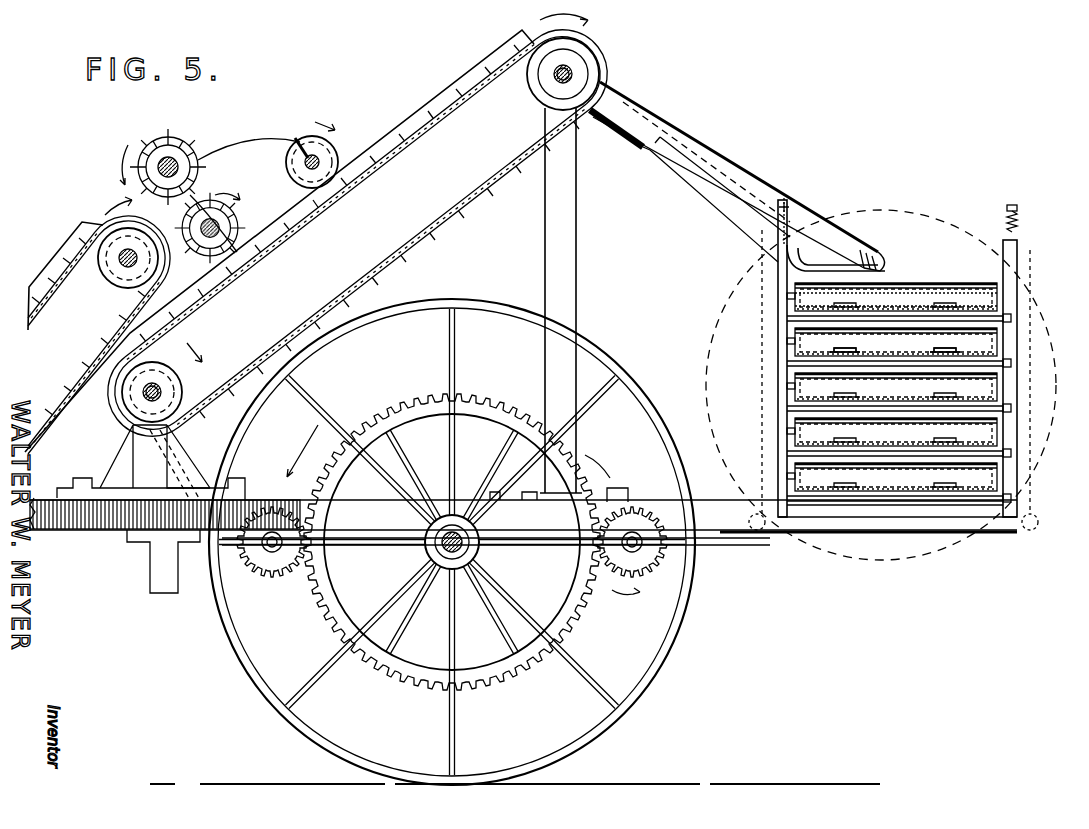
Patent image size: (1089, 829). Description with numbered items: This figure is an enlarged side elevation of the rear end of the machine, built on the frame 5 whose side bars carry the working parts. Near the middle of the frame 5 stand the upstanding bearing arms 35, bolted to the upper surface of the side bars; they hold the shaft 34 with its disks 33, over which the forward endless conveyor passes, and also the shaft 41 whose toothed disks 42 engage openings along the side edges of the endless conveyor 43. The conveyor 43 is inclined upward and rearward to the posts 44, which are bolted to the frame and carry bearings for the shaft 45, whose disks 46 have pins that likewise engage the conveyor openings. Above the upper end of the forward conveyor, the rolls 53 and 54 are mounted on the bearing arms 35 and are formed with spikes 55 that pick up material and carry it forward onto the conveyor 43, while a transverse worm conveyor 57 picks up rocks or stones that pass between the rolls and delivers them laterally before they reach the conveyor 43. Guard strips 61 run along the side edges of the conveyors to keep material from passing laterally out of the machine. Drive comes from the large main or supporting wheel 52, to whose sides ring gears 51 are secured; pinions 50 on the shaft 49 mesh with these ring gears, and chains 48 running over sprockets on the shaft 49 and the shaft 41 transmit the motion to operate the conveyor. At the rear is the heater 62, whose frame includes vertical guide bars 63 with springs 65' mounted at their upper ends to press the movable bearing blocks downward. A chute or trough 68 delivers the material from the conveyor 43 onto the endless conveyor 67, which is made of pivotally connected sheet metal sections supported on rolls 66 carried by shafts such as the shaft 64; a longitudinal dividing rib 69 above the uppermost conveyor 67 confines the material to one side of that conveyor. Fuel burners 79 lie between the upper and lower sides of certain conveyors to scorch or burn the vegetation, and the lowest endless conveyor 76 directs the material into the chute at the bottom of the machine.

The frame 5 is at (82, 517).
The disks 33 is at (100, 278).
The shaft 34 is at (125, 265).
The bearing arms 35 is at (148, 455).
The shaft 41 is at (147, 392).
The disks 42 is at (182, 385).
The endless conveyor 43 is at (290, 232).
The posts 44 is at (568, 257).
The shaft 45 is at (573, 72).
The disks 46 is at (537, 95).
The chains 48 is at (187, 343).
The shaft 49 is at (257, 590).
The pinions 50 is at (262, 548).
The ring gears 51 is at (502, 678).
The main or supporting wheel 52 is at (670, 632).
The roll 53 is at (190, 152).
The roll 54 is at (238, 215).
The spikes 55 is at (165, 140).
The worm conveyor 57 is at (328, 140).
The guard strips 61 is at (418, 110).
The heater 62 is at (768, 345).
The vertical guide bars 63 is at (775, 367).
The shaft 64 is at (1000, 470).
The springs 65' is at (930, 207).
The rolls 66 is at (983, 292).
The endless conveyor 67 is at (933, 277).
The chute or trough 68 is at (705, 152).
The dividing rib 69 is at (898, 282).
The endless conveyor 76 is at (877, 480).
The fuel burners 79 is at (917, 346).